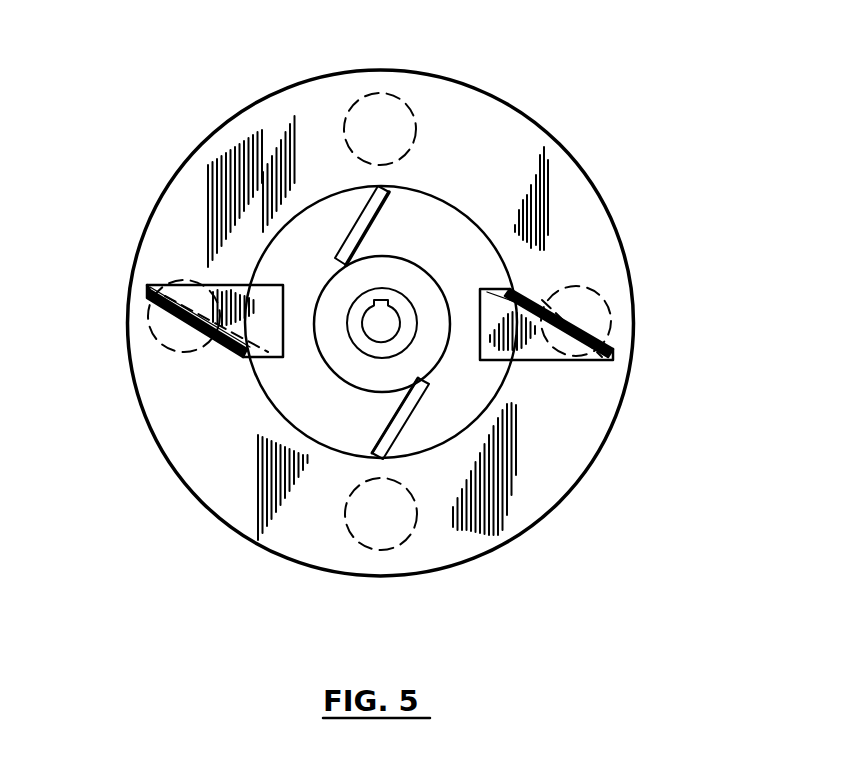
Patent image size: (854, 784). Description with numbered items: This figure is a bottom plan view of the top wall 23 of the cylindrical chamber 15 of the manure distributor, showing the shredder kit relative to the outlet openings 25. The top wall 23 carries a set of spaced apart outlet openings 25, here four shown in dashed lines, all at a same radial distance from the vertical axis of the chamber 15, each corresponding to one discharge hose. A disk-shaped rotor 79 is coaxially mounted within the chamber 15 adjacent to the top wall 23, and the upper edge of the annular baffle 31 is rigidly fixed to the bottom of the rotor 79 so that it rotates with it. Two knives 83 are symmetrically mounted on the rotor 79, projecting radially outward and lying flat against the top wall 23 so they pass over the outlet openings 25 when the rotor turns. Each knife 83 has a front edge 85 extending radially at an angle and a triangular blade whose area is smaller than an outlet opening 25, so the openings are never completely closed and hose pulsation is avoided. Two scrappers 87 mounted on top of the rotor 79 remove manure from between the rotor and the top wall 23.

The cylindrical chamber 15 is at (225, 525).
The top wall 23 is at (475, 130).
The outlet openings 25 is at (373, 112).
The annular baffle 31 is at (510, 390).
The disk-shaped rotor 79 is at (470, 245).
The knives 83 is at (150, 294).
The front edge 85 is at (515, 292).
The scrappers 87 is at (343, 240).